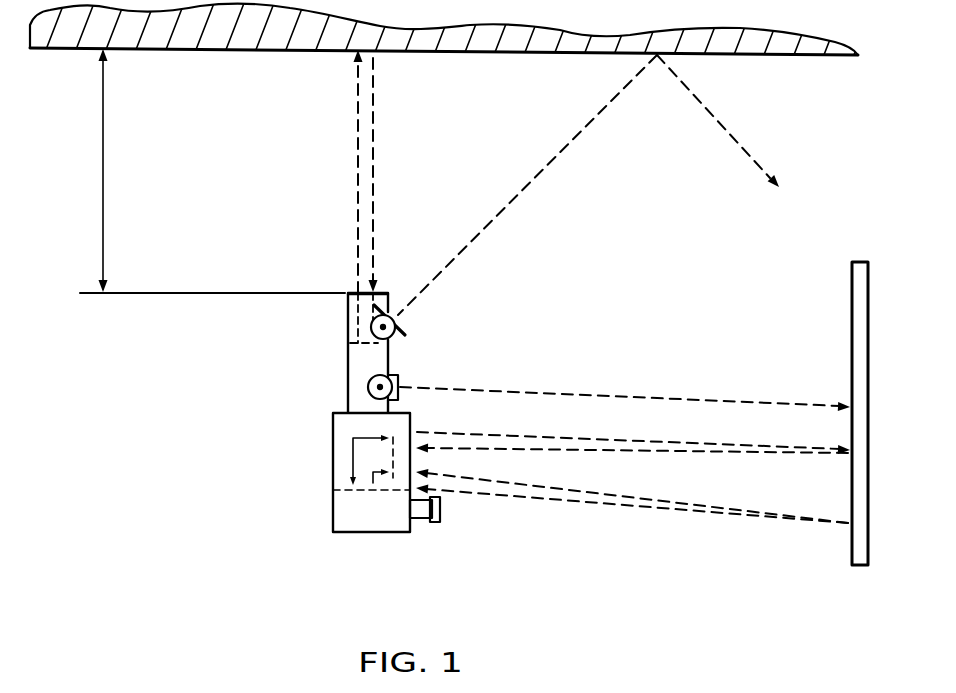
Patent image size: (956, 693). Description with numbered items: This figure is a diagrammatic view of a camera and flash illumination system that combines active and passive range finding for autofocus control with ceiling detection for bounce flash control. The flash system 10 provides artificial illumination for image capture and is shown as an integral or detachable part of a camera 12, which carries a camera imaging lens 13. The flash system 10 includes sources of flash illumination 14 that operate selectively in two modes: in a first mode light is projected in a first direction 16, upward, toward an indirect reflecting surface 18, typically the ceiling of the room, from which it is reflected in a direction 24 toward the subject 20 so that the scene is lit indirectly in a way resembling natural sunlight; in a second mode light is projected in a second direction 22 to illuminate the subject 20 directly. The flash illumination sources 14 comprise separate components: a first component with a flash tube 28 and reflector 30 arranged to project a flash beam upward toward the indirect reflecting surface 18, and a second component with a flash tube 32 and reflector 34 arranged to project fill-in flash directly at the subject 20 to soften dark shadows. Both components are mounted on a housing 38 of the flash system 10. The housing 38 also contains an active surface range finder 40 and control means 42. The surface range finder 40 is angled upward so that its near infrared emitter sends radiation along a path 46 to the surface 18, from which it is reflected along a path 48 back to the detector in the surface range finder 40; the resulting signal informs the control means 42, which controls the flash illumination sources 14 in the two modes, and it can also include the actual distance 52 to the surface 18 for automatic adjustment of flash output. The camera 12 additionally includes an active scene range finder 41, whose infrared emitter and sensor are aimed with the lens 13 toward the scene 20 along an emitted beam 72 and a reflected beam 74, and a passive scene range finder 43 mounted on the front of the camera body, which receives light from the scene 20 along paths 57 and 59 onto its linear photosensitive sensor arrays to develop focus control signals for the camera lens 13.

The flash system 10 is at (390, 409).
The camera 12 is at (324, 437).
The camera imaging lens 13 is at (437, 523).
The sources of flash illumination 14 is at (451, 356).
The first direction 16 is at (514, 208).
The indirect reflecting surface 18 is at (465, 53).
The subject 20 is at (840, 332).
The second direction 22 is at (662, 397).
The direction of reflected light 24 is at (742, 132).
The flash tube 28 is at (400, 317).
The reflector 30 is at (406, 331).
The flash tube 32 is at (401, 382).
The reflector 34 is at (401, 392).
The housing 38 is at (348, 393).
The active surface range finder 40 is at (347, 293).
The active scene range finder 41 is at (402, 427).
The control means 42 is at (340, 367).
The passive scene range finder 43 is at (403, 480).
The emitted path 46 is at (357, 173).
The reflected path 48 is at (376, 197).
The actual distance 52 is at (100, 163).
The light path 57 is at (624, 493).
The light path 59 is at (598, 514).
The emitted beam 72 is at (733, 442).
The reflected beam 74 is at (720, 452).